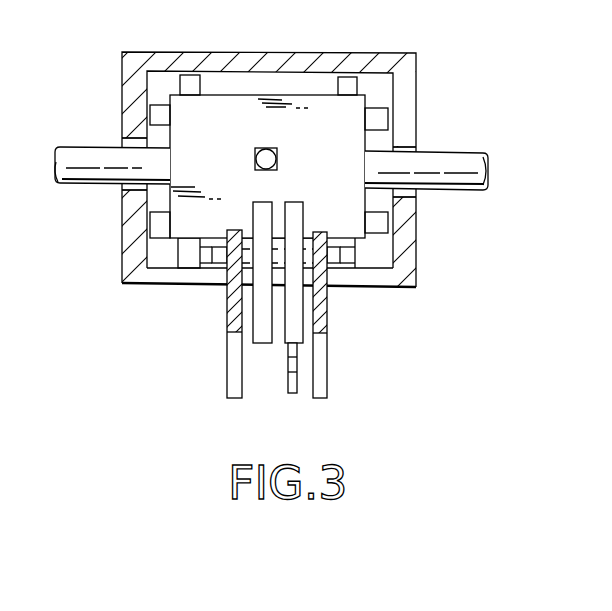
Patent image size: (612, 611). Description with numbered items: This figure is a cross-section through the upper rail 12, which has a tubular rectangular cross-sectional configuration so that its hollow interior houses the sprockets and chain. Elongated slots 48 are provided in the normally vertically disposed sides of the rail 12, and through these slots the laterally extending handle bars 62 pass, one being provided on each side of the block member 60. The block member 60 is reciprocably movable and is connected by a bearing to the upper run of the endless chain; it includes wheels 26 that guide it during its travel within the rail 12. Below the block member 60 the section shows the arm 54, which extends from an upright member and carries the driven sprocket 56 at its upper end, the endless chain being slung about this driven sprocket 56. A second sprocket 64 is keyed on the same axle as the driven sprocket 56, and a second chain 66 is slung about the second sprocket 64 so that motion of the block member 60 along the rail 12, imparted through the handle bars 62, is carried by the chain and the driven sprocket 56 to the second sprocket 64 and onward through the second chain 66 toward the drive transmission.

The upper rail 12 is at (411, 86).
The wheels 26 is at (350, 82).
The elongated slots 48 is at (127, 188).
The arm 54 is at (318, 360).
The driven sprocket 56 is at (262, 207).
The block member 60 is at (232, 138).
The handle bars 62 is at (88, 152).
The second sprocket 64 is at (297, 202).
The second chain 66 is at (288, 377).